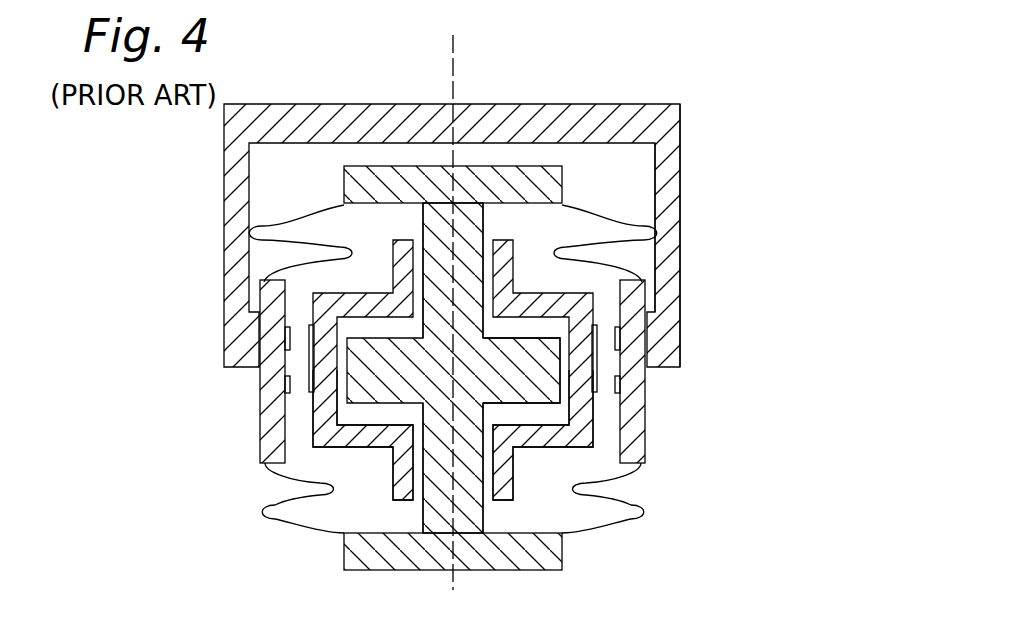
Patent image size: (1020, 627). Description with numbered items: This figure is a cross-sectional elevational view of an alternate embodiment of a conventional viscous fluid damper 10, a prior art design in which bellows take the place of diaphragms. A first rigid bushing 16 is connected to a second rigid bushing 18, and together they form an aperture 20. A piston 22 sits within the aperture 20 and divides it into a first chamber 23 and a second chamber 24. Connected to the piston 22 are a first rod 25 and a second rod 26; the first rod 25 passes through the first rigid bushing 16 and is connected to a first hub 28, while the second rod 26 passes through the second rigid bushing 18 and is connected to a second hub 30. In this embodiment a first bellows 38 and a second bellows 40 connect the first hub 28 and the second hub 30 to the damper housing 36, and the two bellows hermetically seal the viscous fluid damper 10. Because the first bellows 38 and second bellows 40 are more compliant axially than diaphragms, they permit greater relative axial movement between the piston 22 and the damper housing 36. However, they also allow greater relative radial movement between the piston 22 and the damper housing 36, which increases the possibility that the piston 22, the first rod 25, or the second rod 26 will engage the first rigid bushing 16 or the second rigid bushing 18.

The viscous fluid damper 10 is at (695, 310).
The first rigid bushing 16 is at (595, 297).
The second rigid bushing 18 is at (597, 448).
The aperture 20 is at (573, 388).
The piston 22 is at (453, 368).
The first chamber 23 is at (360, 327).
The second chamber 24 is at (357, 415).
The first rod 25 is at (413, 213).
The second rod 26 is at (485, 516).
The first hub 28 is at (530, 163).
The second hub 30 is at (565, 572).
The damper housing 36 is at (648, 427).
The first bellows 38 is at (667, 228).
The second bellows 40 is at (265, 510).